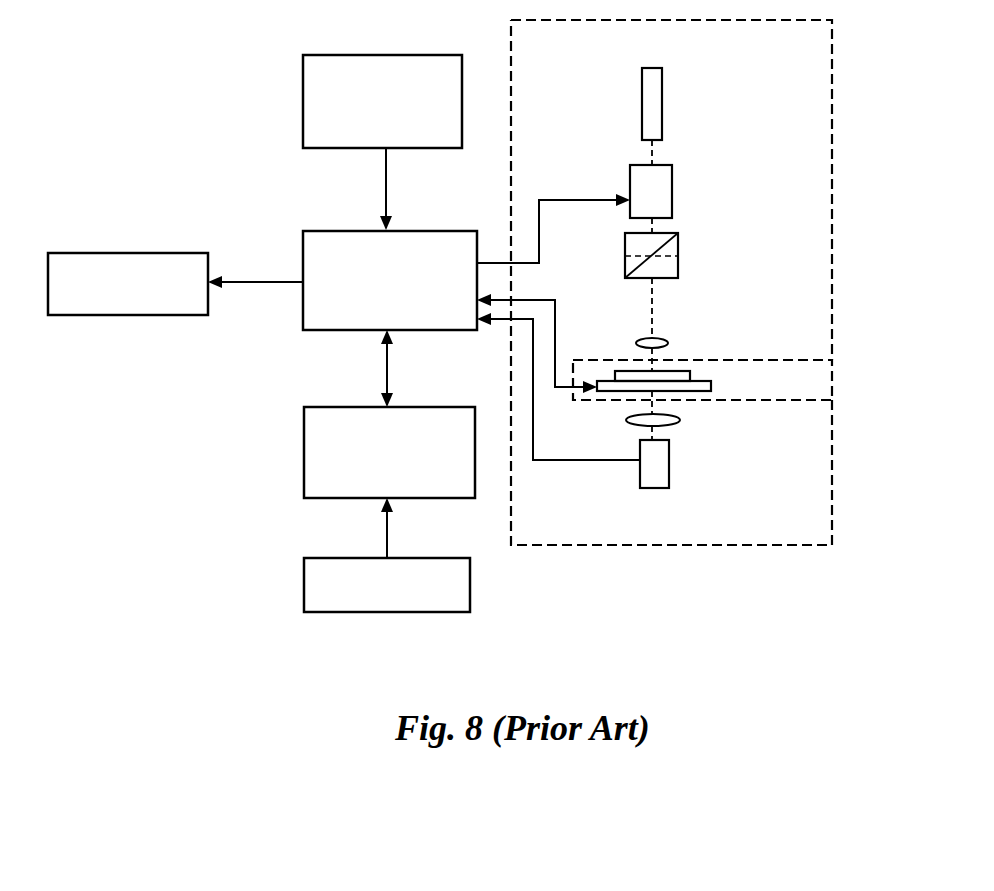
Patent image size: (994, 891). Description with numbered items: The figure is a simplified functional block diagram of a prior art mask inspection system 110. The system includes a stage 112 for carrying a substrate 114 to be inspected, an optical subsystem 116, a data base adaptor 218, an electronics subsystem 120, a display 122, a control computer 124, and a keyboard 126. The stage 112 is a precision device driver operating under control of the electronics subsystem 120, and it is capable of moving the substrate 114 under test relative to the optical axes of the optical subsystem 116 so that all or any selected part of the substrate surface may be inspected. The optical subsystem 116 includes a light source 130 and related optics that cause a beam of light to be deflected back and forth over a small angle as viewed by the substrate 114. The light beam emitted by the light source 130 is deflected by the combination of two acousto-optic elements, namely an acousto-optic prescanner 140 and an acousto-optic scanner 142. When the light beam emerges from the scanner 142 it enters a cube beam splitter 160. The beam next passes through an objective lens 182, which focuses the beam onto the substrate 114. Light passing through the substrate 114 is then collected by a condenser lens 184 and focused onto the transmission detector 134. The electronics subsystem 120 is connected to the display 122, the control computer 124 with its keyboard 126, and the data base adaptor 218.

The mask inspection system 110 is at (190, 527).
The stage 112 is at (597, 383).
The substrate 114 is at (700, 374).
The optical subsystem 116 is at (833, 160).
The electronics subsystem 120 is at (408, 231).
The display 122 is at (155, 253).
The control computer 124 is at (340, 406).
The keyboard 126 is at (410, 558).
The light source 130 is at (650, 66).
The transmission detector 134 is at (670, 473).
The acousto-optic prescanner 140 is at (665, 165).
The acousto-optic scanner 142 is at (802, 102).
The cube beam splitter 160 is at (683, 255).
The objective lens 182 is at (660, 338).
The condenser lens 184 is at (680, 420).
The data base adaptor 218 is at (350, 55).